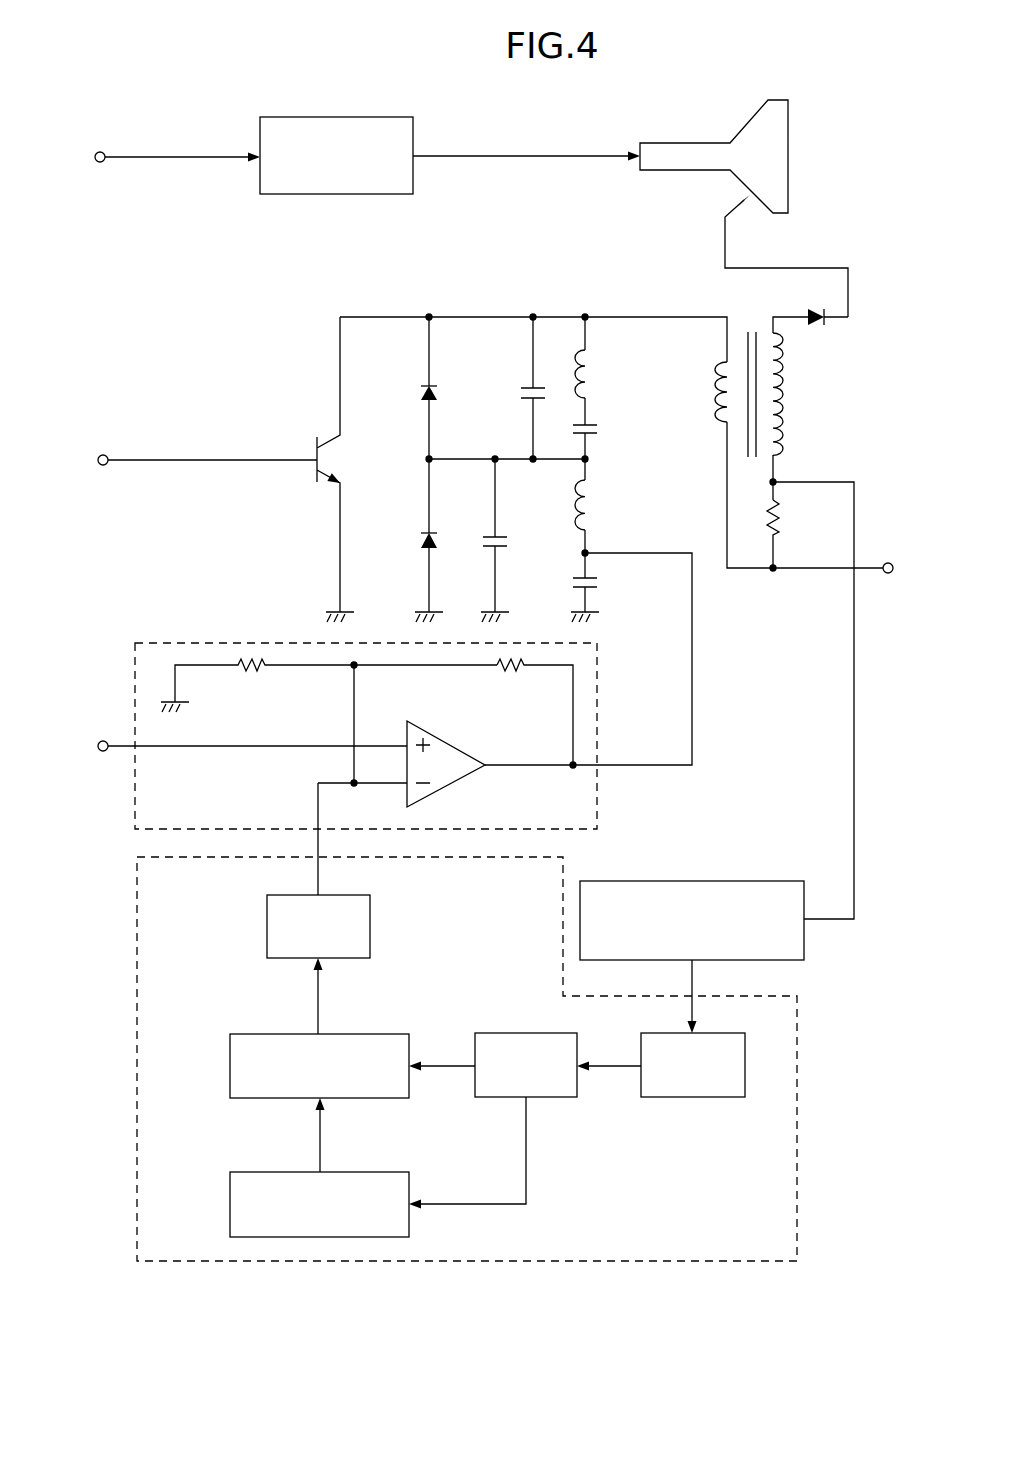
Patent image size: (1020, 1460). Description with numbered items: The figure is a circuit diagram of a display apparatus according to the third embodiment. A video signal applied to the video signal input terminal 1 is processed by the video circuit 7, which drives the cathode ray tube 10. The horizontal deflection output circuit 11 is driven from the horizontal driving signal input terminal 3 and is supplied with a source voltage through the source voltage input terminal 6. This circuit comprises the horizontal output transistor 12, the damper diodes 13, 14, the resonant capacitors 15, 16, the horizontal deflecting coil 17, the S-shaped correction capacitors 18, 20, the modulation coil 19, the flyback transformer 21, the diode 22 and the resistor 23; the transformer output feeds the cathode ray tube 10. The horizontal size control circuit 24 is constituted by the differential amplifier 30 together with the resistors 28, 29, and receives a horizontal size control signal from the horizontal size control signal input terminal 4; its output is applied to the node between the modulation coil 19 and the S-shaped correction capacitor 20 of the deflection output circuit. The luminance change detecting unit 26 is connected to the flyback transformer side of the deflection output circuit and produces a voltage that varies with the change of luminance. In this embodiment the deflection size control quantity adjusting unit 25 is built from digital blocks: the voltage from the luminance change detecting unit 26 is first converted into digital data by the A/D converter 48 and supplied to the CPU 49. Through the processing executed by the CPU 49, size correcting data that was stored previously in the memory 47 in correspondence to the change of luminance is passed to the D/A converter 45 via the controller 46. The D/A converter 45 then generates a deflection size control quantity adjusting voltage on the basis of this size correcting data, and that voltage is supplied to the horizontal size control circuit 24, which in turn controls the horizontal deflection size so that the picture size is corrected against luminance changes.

The video signal input terminal 1 is at (100, 150).
The horizontal driving signal input terminal 3 is at (103, 466).
The horizontal size control signal input terminal 4 is at (103, 752).
The source voltage input terminal 6 is at (888, 574).
The video circuit 7 is at (335, 117).
The cathode ray tube 10 is at (790, 153).
The horizontal deflection output circuit 11 is at (280, 335).
The horizontal output transistor 12 is at (330, 487).
The damper diode 13 is at (419, 391).
The damper diode 14 is at (419, 539).
The resonant capacitor 15 is at (513, 394).
The resonant capacitor 16 is at (523, 540).
The horizontal deflecting coil 17 is at (600, 372).
The S-shaped correction capacitor 18 is at (598, 432).
The modulation coil 19 is at (603, 507).
The S-shaped correction capacitor 20 is at (610, 587).
The flyback transformer 21 is at (715, 408).
The diode 22 is at (820, 326).
The resistor 23 is at (783, 520).
The horizontal size control circuit 24 is at (602, 800).
The deflection size control quantity adjusting unit 25 is at (798, 1183).
The luminance change detecting unit 26 is at (720, 880).
The resistor 28 is at (253, 677).
The resistor 29 is at (507, 677).
The differential amplifier 30 is at (447, 783).
The D/A converter 45 is at (372, 923).
The controller 46 is at (230, 1068).
The memory 47 is at (230, 1204).
The A/D converter 48 is at (692, 1098).
The CPU 49 is at (525, 1033).